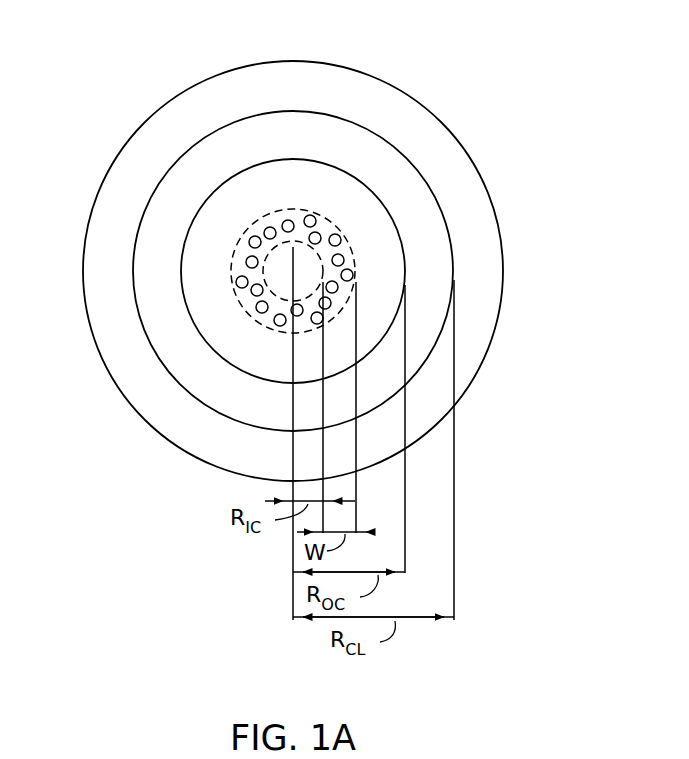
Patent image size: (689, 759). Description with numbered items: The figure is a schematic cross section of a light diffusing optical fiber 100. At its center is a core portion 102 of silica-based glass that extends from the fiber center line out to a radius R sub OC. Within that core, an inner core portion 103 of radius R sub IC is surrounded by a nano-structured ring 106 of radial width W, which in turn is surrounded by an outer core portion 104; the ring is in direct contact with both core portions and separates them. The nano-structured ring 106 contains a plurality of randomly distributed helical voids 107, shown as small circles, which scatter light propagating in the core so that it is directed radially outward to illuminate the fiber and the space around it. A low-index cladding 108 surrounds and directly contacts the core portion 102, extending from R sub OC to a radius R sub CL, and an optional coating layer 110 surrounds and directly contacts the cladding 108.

The light diffusing optical fiber 100 is at (522, 88).
The core portion 102 is at (425, 258).
The inner core portion 103 is at (275, 217).
The outer core portion 104 is at (183, 262).
The nano-structured ring 106 is at (233, 278).
The helical voids 107 is at (355, 241).
The cladding 108 is at (293, 111).
The coating layer 110 is at (145, 121).